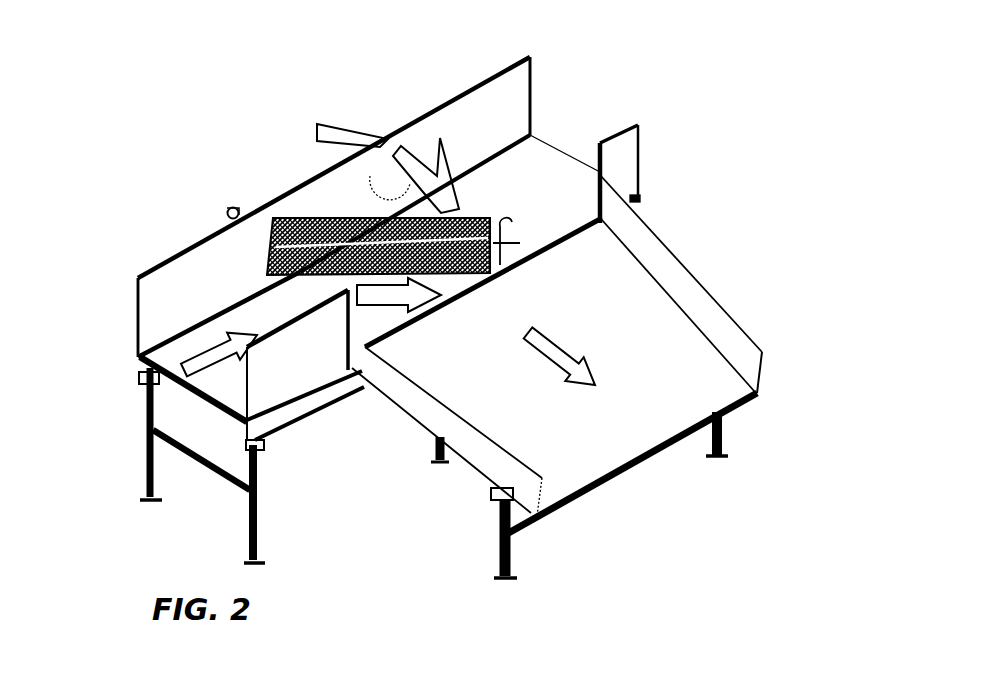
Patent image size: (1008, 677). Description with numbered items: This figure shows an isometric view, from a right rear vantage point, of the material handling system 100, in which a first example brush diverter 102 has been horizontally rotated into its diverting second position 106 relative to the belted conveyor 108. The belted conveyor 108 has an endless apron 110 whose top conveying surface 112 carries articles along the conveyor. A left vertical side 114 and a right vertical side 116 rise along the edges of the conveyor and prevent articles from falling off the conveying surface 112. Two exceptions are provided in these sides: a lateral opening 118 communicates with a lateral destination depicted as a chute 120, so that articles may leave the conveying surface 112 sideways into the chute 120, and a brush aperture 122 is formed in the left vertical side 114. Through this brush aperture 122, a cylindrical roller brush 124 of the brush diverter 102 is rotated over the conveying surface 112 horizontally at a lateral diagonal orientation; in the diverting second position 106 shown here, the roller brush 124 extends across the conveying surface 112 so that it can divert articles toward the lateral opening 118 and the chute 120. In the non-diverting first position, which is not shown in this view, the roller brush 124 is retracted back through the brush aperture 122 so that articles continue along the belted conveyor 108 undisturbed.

The material handling system 100 is at (708, 51).
The first example brush diverter 102 is at (228, 205).
The diverting second position 106 is at (293, 160).
The belted conveyor 108 is at (533, 193).
The endless apron 110 is at (515, 142).
The top conveying surface 112 is at (557, 160).
The left vertical side 114 is at (180, 248).
The right vertical side 116 is at (290, 377).
The lateral opening 118 is at (600, 195).
The chute 120 is at (660, 427).
The brush aperture 122 is at (398, 150).
The cylindrical roller brush 124 is at (445, 207).